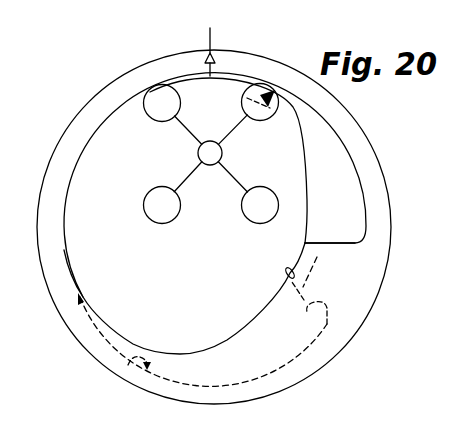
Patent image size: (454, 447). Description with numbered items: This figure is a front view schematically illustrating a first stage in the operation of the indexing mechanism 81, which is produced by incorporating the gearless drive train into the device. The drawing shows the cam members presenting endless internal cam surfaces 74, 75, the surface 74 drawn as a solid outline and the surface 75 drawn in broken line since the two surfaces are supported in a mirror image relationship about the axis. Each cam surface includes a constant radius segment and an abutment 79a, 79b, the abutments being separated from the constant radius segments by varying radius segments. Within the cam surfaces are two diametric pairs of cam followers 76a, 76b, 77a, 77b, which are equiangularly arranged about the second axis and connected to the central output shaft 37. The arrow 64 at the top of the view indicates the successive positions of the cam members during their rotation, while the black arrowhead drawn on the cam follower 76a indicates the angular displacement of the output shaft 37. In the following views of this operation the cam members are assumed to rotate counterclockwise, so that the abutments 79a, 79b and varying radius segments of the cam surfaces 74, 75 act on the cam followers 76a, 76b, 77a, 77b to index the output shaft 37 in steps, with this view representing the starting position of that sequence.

The output shaft 37 is at (214, 141).
The arrow 64 is at (218, 74).
The internal cam surface 74 is at (334, 136).
The internal cam surface 75 is at (126, 376).
The cam follower 76a is at (254, 121).
The cam follower 76b is at (160, 224).
The cam follower 77a is at (159, 122).
The cam follower 77b is at (266, 223).
The abutment 79a is at (352, 224).
The abutment 79b is at (308, 319).
The indexing mechanism 81 is at (109, 63).